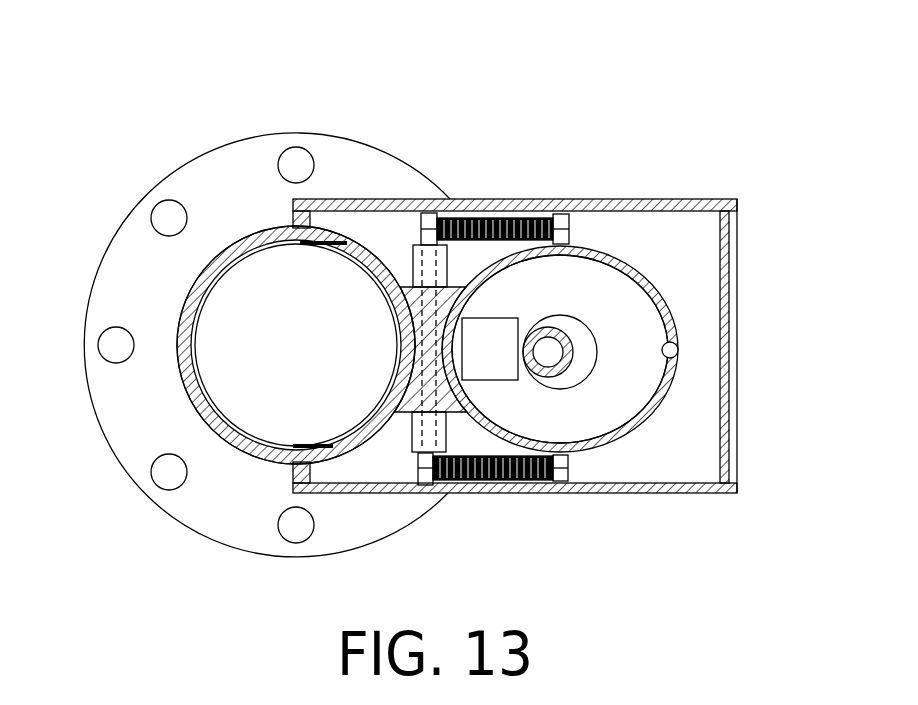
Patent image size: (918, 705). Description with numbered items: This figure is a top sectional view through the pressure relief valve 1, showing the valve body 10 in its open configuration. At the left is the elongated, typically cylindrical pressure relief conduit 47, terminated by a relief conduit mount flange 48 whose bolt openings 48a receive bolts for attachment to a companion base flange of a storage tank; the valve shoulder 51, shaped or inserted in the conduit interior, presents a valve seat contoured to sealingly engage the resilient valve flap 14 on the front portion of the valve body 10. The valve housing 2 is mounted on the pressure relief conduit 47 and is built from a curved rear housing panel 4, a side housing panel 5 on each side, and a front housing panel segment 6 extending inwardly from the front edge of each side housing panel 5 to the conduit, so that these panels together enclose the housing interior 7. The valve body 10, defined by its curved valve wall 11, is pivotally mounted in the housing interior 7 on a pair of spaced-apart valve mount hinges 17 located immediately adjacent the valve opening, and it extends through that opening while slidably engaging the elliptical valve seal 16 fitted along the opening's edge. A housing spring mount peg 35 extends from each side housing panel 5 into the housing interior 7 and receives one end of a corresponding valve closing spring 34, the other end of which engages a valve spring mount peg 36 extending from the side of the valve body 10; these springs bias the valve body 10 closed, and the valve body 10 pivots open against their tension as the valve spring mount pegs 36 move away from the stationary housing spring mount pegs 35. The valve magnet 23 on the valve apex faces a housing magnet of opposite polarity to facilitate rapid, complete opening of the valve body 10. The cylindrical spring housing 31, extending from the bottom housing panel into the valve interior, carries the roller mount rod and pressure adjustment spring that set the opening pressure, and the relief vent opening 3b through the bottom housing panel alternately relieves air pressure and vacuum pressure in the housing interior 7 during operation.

The pressure relief valve 1 is at (458, 294).
The valve housing 2 is at (737, 322).
The relief vent opening 3b is at (663, 350).
The rear housing panel 4 is at (725, 352).
The side housing panel 5 is at (690, 199).
The front housing panel segment 6 is at (292, 216).
The housing interior 7 is at (687, 418).
The valve body 10 is at (646, 274).
The valve wall 11 is at (630, 430).
The valve flap 14 is at (388, 330).
The valve seal 16 is at (328, 252).
The valve mount hinge 17 is at (416, 250).
The valve magnet 23 is at (474, 366).
The spring housing 31 is at (538, 330).
The valve closing spring 34 is at (493, 217).
The housing spring mount peg 35 is at (432, 222).
The valve spring mount peg 36 is at (562, 228).
The pressure relief conduit 47 is at (184, 392).
The relief conduit mount flange 48 is at (130, 248).
The bolt opening 48a is at (296, 163).
The valve shoulder 51 is at (197, 353).